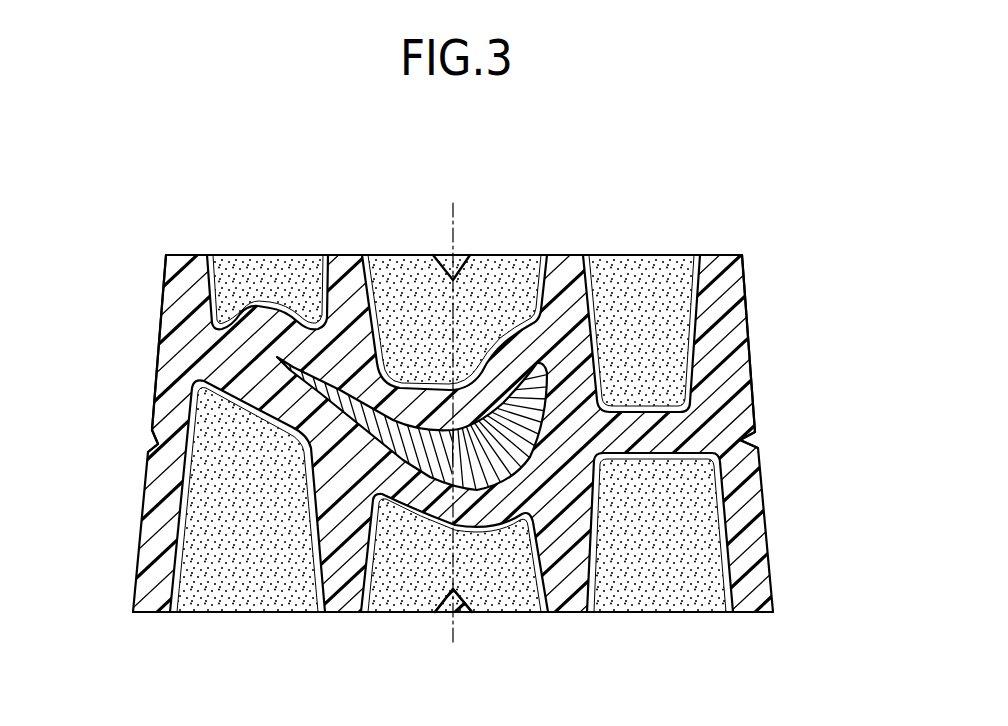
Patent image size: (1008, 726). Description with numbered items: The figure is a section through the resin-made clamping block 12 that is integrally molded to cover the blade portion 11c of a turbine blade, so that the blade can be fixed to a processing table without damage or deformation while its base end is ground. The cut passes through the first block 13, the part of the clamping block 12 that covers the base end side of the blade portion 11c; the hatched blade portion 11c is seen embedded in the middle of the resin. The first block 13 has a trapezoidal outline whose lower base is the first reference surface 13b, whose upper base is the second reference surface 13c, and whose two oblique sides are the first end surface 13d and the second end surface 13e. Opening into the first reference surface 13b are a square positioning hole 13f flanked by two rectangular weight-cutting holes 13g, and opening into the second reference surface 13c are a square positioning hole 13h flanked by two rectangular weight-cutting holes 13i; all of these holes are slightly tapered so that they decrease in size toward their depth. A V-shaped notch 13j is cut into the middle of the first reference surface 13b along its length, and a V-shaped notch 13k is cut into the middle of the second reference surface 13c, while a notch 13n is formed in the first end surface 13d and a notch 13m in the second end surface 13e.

The blade portion 11c is at (497, 485).
The clamping block 12 is at (784, 266).
The first block 13 is at (156, 281).
The first reference surface 13b is at (566, 613).
The second reference surface 13c is at (566, 253).
The first end surface 13d is at (753, 357).
The second end surface 13e is at (157, 365).
The positioning hole 13f is at (364, 578).
The weight-cutting holes 13g is at (175, 573).
The positioning hole 13h is at (387, 280).
The weight-cutting holes 13i is at (220, 292).
The V-shaped notch 13j is at (460, 613).
The V-shaped notch 13k is at (460, 268).
The notch 13m is at (153, 441).
The notch 13n is at (744, 441).